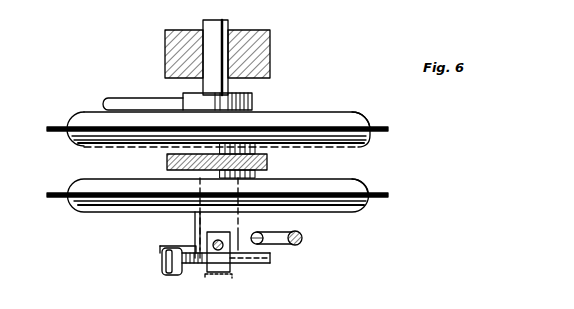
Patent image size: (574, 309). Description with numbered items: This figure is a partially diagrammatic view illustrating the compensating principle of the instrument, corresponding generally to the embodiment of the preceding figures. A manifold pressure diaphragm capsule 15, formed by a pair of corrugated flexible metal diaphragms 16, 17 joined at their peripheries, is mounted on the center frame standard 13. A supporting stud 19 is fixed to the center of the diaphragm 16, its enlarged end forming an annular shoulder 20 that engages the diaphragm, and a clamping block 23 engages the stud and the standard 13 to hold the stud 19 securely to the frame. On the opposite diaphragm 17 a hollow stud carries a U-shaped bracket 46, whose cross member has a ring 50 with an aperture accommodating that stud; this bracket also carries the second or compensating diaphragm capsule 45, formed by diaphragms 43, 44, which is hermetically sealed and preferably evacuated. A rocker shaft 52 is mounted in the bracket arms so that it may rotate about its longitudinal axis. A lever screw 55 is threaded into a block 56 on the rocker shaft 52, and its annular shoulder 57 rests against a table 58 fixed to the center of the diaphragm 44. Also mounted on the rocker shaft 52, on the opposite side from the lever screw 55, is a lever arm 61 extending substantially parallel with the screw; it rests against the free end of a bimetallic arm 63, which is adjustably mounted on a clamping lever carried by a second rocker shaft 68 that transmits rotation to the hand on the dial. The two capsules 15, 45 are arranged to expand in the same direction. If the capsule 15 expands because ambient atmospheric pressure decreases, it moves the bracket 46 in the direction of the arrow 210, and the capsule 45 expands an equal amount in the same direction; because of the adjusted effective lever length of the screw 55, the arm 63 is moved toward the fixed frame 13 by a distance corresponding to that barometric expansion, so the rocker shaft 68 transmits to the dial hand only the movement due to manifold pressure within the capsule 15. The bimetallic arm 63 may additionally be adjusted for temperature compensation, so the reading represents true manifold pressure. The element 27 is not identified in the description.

The center frame member or standard 13 is at (262, 44).
The diaphragm capsule 15 is at (360, 110).
The corrugated flexible metal diaphragm 16 is at (82, 113).
The corrugated flexible metal diaphragm 17 is at (70, 134).
The supporting stud 19 is at (229, 21).
The annular shoulder 20 is at (253, 101).
The clamping block 23 is at (165, 42).
The support arm 27 is at (112, 100).
The corrugated diaphragm 43 is at (80, 186).
The diaphragm 44 is at (76, 204).
The compensating diaphragm capsule 45 is at (368, 182).
The U-shaped bracket 46 is at (268, 164).
The ring 50 is at (260, 129).
The rocker shaft 52 is at (196, 229).
The lever screw 55 is at (195, 265).
The block 56 is at (221, 273).
The annular shoulder 57 is at (165, 268).
The table 58 is at (160, 246).
The lever arm 61 is at (239, 248).
The bimetallic arm 63 is at (262, 233).
The rocker shaft 68 is at (303, 240).
The arrow 210 is at (156, 164).